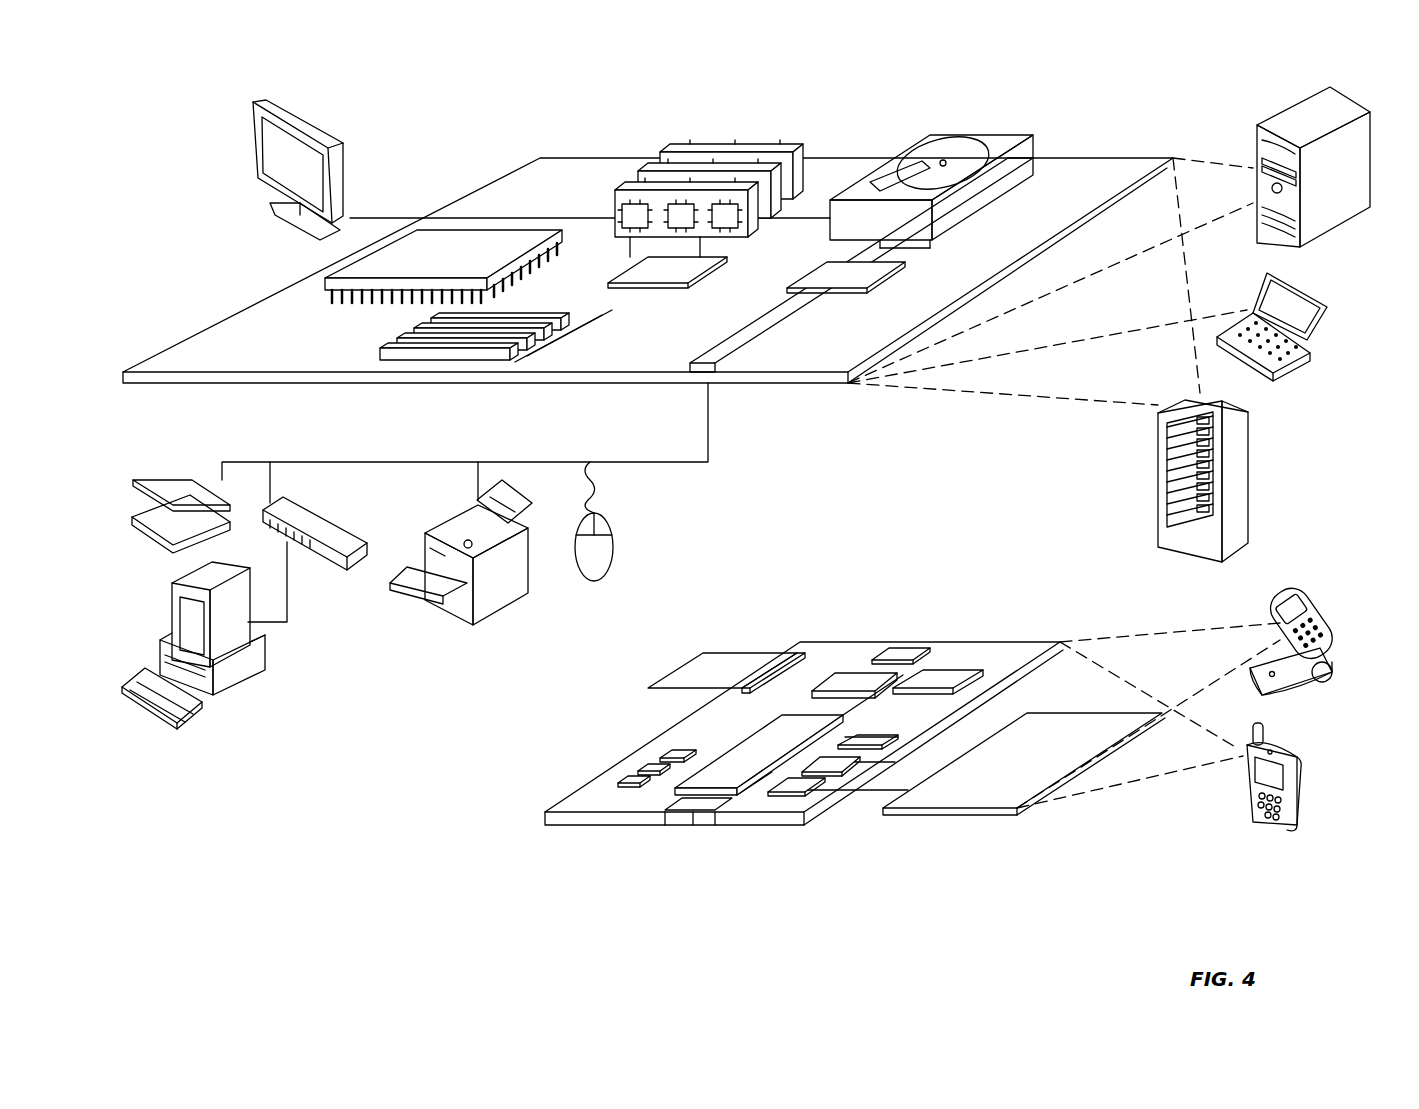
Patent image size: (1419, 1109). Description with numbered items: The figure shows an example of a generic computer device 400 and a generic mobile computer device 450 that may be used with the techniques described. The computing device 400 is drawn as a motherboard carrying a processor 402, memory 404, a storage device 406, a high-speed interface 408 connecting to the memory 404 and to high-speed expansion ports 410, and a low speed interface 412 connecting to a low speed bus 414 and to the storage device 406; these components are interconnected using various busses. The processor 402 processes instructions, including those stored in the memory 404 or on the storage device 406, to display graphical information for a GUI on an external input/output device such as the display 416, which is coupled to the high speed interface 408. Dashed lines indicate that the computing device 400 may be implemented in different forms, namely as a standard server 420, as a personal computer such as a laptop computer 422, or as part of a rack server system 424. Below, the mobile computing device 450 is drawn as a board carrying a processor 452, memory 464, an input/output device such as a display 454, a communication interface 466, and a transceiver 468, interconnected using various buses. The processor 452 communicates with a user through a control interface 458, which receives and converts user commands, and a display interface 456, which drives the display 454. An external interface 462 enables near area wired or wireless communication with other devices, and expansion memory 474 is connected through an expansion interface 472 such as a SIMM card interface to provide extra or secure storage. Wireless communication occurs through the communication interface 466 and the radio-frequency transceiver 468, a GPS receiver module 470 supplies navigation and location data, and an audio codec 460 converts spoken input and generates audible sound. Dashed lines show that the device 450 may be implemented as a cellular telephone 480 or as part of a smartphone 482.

The computing device 400 is at (450, 128).
The processor 402 is at (325, 283).
The memory 404 is at (678, 150).
The storage device 406 is at (928, 139).
The high-speed interface 408 is at (608, 282).
The high-speed expansion ports 410 is at (403, 343).
The low speed interface 412 is at (832, 271).
The low speed bus 414 is at (717, 372).
The display 416 is at (258, 101).
The standard server 420 is at (1261, 143).
The laptop computer 422 is at (1321, 300).
The rack server system 424 is at (1160, 504).
The mobile computing device 450 is at (512, 823).
The processor 452 is at (732, 778).
The display 454 is at (982, 798).
The display interface 456 is at (807, 787).
The control interface 458 is at (847, 765).
The audio codec 460 is at (866, 740).
The external interface 462 is at (693, 817).
The memory 464 is at (647, 764).
The communication interface 466 is at (865, 682).
The transceiver 468 is at (932, 683).
The GPS receiver module 470 is at (913, 645).
The expansion interface 472 is at (779, 658).
The expansion memory 474 is at (707, 658).
The cellular telephone 480 is at (1299, 601).
The smartphone 482 is at (1243, 788).